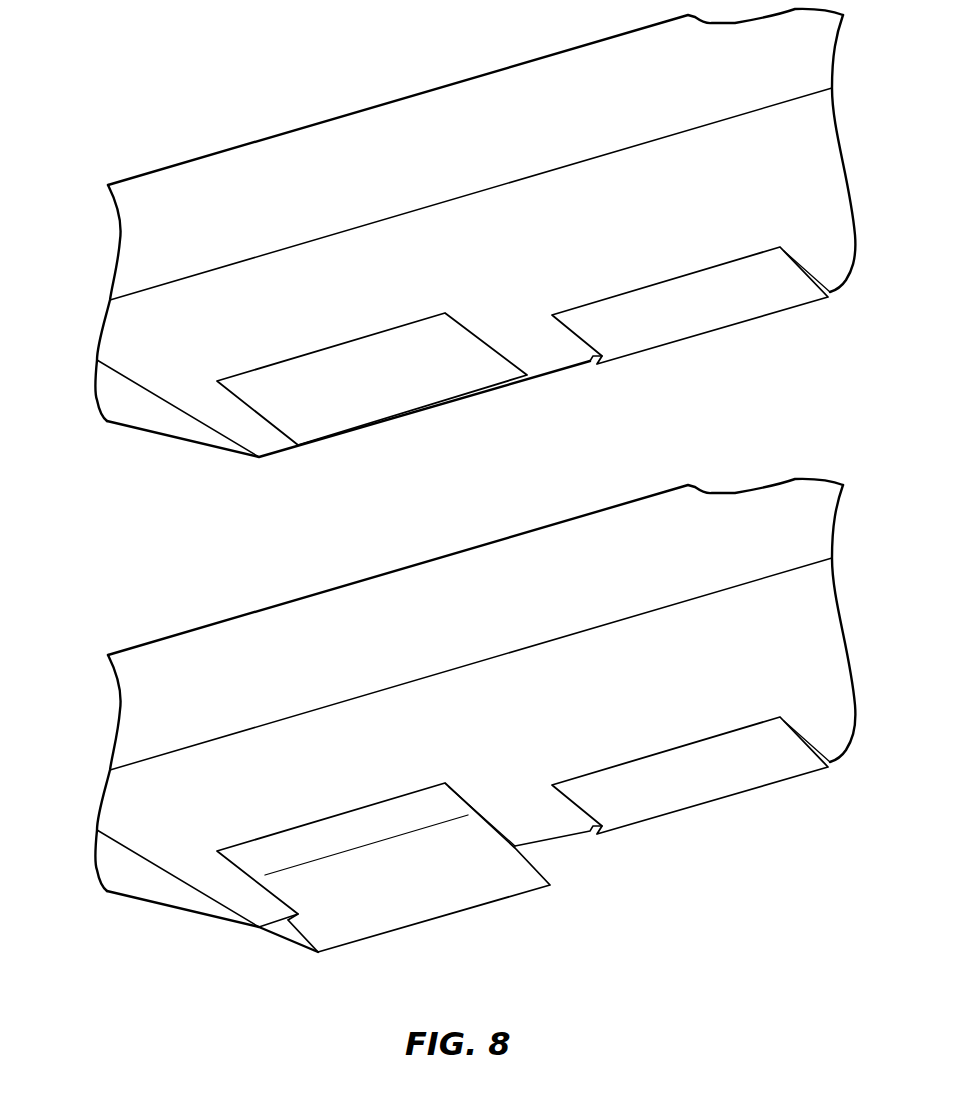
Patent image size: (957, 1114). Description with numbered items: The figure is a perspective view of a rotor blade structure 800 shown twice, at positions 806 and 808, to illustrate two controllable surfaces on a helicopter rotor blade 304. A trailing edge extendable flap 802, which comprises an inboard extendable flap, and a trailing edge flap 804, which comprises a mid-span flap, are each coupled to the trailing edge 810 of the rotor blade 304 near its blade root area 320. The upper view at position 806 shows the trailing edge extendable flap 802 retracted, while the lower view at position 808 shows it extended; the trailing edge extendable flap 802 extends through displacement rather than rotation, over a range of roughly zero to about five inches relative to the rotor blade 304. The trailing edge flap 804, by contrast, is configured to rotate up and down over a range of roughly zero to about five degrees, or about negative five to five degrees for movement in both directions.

The rotor blade structure 800 is at (263, 35).
The rotor blade 304 is at (222, 182).
The position 806 is at (90, 253).
The position 808 is at (90, 723).
The blade root area 320 is at (150, 408).
The trailing edge extendable flap 802 is at (370, 397).
The trailing edge flap 804 is at (670, 323).
The trailing edge 810 is at (832, 277).